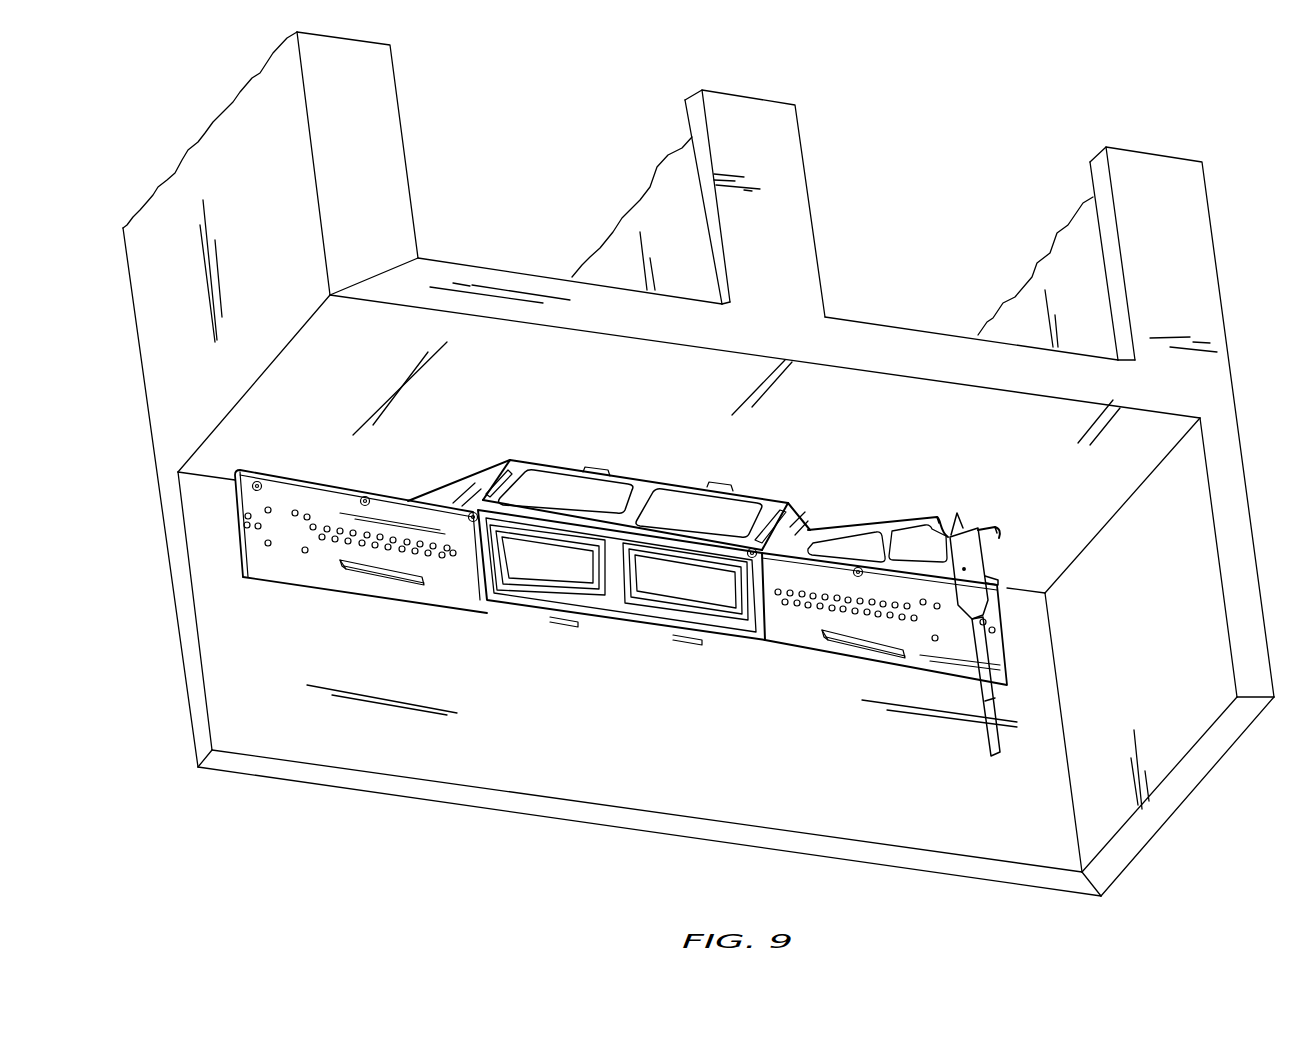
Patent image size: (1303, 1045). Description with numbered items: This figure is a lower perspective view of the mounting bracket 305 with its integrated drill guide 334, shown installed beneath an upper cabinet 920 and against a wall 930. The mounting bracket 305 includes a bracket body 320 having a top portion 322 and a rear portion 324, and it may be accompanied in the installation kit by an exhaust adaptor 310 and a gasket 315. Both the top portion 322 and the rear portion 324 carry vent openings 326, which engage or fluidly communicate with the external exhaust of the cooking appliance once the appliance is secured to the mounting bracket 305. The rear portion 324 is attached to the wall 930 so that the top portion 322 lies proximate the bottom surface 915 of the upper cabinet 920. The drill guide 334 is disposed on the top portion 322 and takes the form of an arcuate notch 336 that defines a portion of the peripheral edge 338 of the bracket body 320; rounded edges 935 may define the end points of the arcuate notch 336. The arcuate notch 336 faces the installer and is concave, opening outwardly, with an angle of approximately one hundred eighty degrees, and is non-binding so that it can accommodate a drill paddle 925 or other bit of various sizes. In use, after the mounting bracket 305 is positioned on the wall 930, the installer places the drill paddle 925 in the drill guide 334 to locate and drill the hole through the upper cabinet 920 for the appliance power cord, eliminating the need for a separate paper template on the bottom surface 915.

The upper cabinet 920 is at (466, 225).
The bottom surface 915 is at (597, 347).
The wall 930 is at (213, 538).
The mounting bracket 305 is at (442, 592).
The rear portion 324 is at (260, 562).
The top portion 322 is at (787, 503).
The vent openings 326 is at (550, 578).
The exhaust adaptor 310 is at (651, 603).
The gasket 315 is at (617, 617).
The bracket body 320 is at (913, 660).
The drill guide 334 is at (845, 505).
The peripheral edge 338 is at (900, 520).
The rounded edges 935 is at (937, 517).
The arcuate notch 336 is at (973, 530).
The drill paddle 925 is at (967, 573).